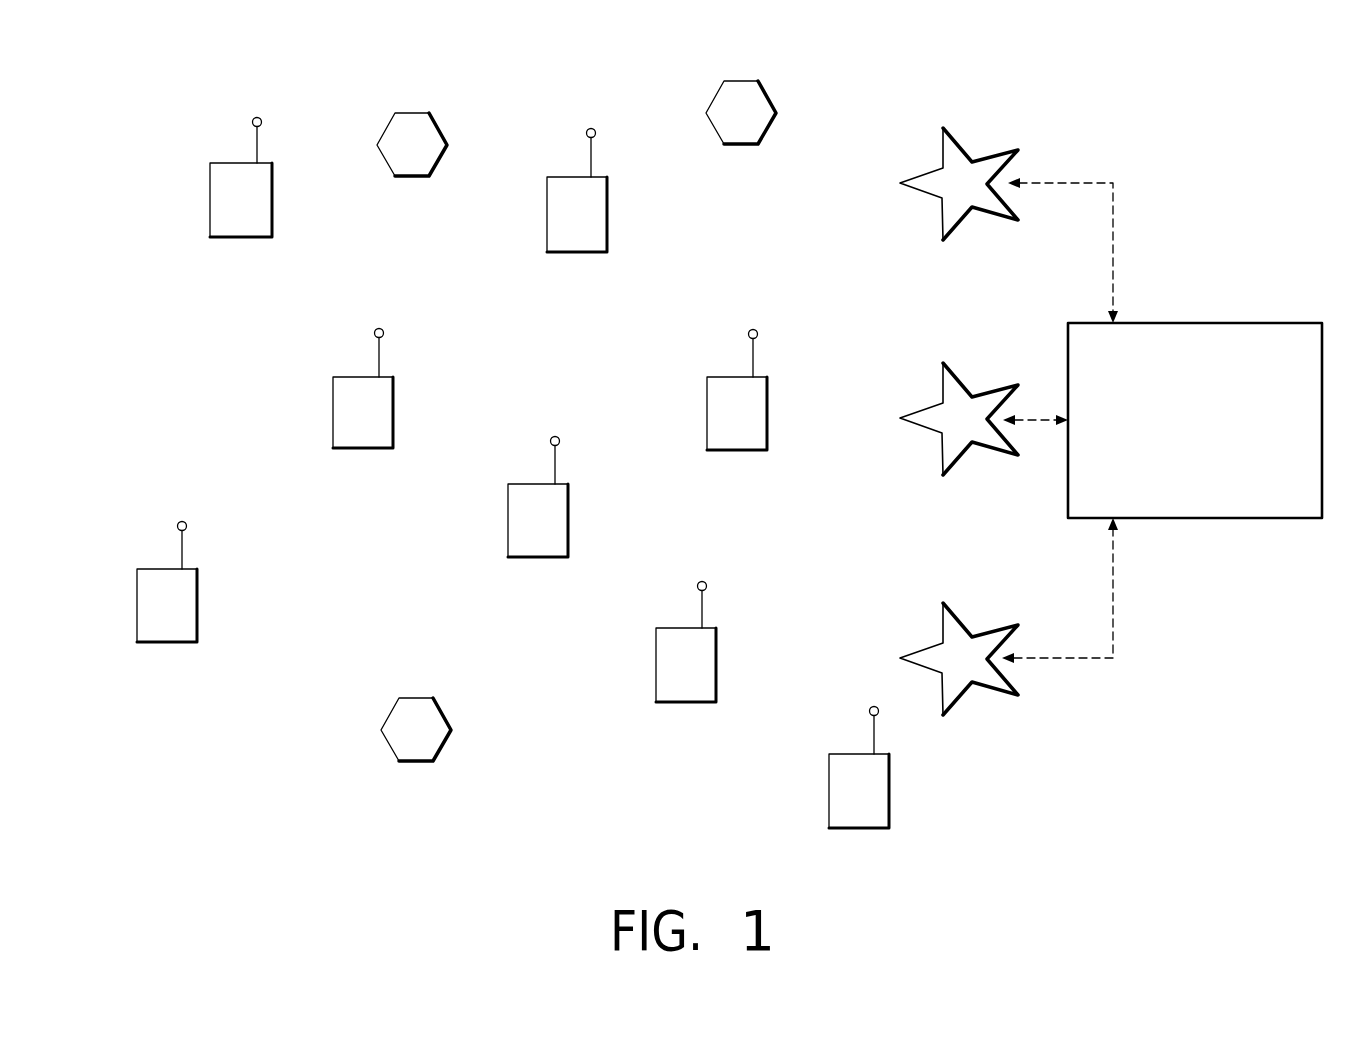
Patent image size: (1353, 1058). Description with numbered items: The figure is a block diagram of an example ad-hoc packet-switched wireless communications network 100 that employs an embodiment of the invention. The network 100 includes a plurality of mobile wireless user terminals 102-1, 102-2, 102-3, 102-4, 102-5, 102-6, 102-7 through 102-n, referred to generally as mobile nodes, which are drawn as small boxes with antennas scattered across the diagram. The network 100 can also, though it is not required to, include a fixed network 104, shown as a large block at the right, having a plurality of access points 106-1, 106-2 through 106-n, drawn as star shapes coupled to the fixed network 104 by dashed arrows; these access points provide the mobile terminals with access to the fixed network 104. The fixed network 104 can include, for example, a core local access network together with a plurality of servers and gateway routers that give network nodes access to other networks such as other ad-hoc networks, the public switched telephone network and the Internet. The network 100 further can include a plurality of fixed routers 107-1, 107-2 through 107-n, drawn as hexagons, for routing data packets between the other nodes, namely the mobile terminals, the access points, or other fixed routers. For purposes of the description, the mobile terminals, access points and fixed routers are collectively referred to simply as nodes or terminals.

The ad-hoc packet-switched wireless communications network 100 is at (1160, 111).
The mobile wireless user terminal 102-1 is at (240, 243).
The mobile wireless user terminal 102-2 is at (573, 256).
The mobile wireless user terminal 102-3 is at (358, 452).
The mobile wireless user terminal 102-4 is at (162, 646).
The mobile wireless user terminal 102-5 is at (528, 561).
The mobile wireless user terminal 102-6 is at (727, 454).
The mobile wireless user terminal 102-7 is at (676, 706).
The mobile wireless user terminal 102-n is at (850, 832).
The fixed network 104 is at (1238, 521).
The access point 106-1 is at (972, 215).
The access point 106-2 is at (972, 452).
The access point 106-n is at (970, 693).
The fixed router 107-1 is at (408, 180).
The fixed router 107-2 is at (741, 147).
The fixed router 107-n is at (412, 766).